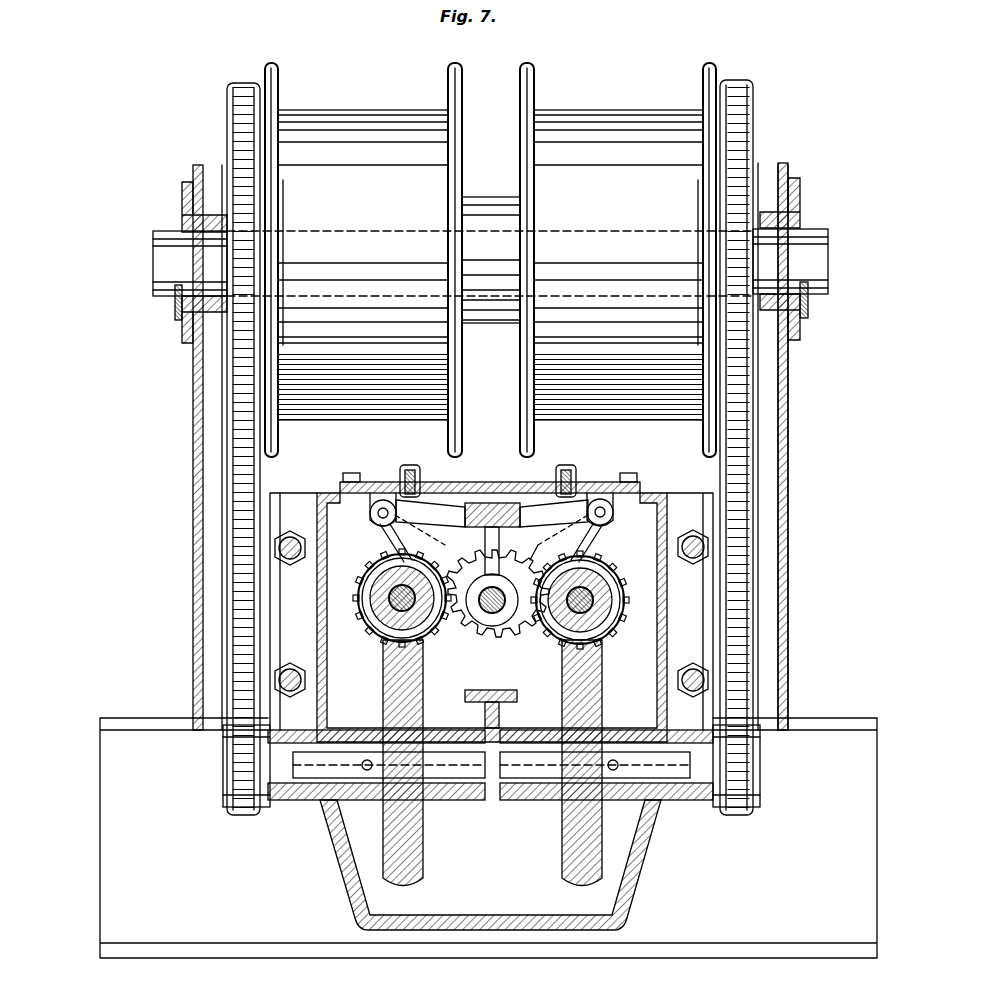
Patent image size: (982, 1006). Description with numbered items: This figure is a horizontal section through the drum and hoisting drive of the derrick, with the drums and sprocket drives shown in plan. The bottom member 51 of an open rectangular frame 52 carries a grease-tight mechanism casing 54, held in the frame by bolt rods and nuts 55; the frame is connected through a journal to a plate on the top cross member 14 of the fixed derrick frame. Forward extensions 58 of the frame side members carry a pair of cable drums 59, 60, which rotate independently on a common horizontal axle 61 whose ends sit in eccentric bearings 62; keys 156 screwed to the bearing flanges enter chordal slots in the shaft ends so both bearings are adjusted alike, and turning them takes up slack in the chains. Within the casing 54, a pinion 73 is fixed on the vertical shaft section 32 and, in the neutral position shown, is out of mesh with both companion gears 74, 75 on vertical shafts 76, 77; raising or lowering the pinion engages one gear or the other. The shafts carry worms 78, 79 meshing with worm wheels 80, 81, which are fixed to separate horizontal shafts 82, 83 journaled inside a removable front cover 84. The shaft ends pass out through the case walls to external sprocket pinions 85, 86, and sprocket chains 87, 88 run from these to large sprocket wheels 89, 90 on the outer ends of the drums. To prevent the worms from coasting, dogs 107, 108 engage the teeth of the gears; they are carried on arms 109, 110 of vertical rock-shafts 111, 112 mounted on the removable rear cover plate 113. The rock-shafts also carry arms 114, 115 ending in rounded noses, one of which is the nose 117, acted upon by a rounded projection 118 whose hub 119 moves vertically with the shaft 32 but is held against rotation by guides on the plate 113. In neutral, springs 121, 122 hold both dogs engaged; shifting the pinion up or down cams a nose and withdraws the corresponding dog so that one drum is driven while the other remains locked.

The top cross member 14 is at (118, 722).
The shaft section 32 is at (478, 628).
The bottom member 51 is at (772, 468).
The open rectangular frame 52 is at (790, 553).
The mechanism casing 54 is at (660, 494).
The bolt rods and nuts 55 is at (290, 666).
The forward extensions 58 is at (194, 352).
The cable drum 59 is at (363, 260).
The cable drum 60 is at (618, 260).
The horizontal axle 61 is at (162, 268).
The eccentric bearings 62 is at (186, 325).
The pinion 73 is at (504, 636).
The companion gear 74 is at (414, 562).
The companion gear 75 is at (608, 575).
The vertical shaft 76 is at (602, 597).
The vertical shaft 77 is at (395, 598).
The worm 78 is at (608, 616).
The worm 79 is at (378, 616).
The worm wheel 80 is at (386, 664).
The worm wheel 81 is at (600, 672).
The horizontal shaft 82 is at (452, 792).
The horizontal shaft 83 is at (527, 792).
The removable front cover 84 is at (500, 932).
The sprocket pinion 85 is at (225, 790).
The sprocket pinion 86 is at (760, 785).
The sprocket chain 87 is at (226, 460).
The sprocket chain 88 is at (762, 438).
The large sprocket wheel 89 is at (228, 98).
The large sprocket wheel 90 is at (756, 100).
The dog 107 is at (393, 546).
The dog 108 is at (588, 540).
The arm 109 is at (440, 537).
The arm 110 is at (559, 533).
The rock-shaft 111 is at (603, 500).
The rock-shaft 112 is at (382, 500).
The rear cover plate 113 is at (542, 480).
The arm 114 is at (448, 500).
The arm 115 is at (522, 500).
The rounded nose 117 is at (492, 503).
The rounded projection 118 is at (542, 557).
The hub 119 is at (492, 612).
The spring 121 is at (412, 465).
The spring 122 is at (578, 468).
The keys 156 is at (176, 306).